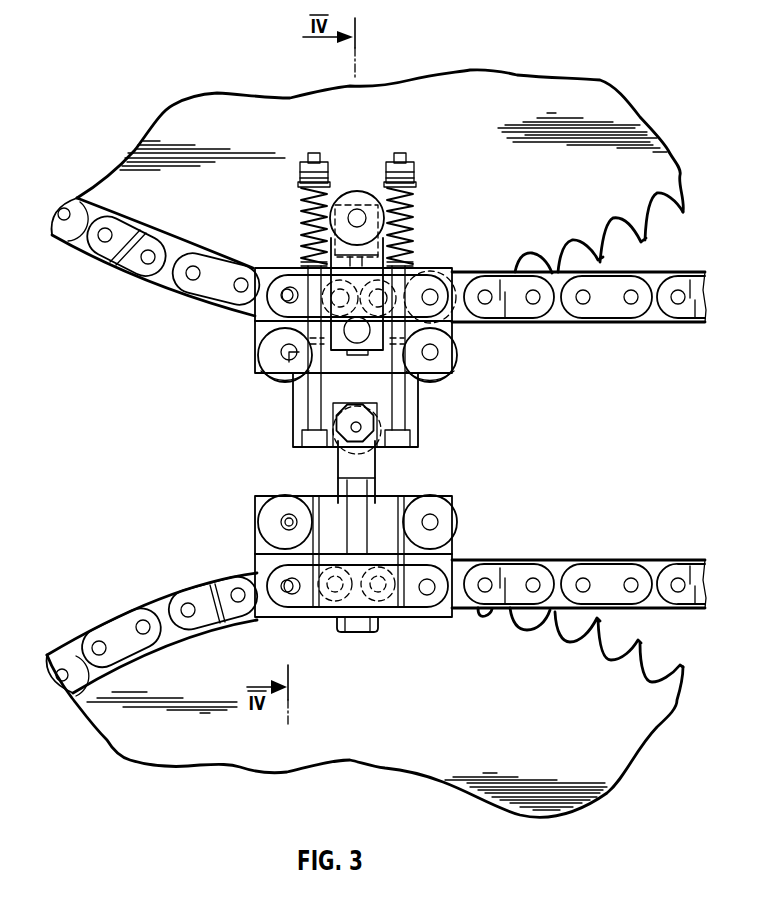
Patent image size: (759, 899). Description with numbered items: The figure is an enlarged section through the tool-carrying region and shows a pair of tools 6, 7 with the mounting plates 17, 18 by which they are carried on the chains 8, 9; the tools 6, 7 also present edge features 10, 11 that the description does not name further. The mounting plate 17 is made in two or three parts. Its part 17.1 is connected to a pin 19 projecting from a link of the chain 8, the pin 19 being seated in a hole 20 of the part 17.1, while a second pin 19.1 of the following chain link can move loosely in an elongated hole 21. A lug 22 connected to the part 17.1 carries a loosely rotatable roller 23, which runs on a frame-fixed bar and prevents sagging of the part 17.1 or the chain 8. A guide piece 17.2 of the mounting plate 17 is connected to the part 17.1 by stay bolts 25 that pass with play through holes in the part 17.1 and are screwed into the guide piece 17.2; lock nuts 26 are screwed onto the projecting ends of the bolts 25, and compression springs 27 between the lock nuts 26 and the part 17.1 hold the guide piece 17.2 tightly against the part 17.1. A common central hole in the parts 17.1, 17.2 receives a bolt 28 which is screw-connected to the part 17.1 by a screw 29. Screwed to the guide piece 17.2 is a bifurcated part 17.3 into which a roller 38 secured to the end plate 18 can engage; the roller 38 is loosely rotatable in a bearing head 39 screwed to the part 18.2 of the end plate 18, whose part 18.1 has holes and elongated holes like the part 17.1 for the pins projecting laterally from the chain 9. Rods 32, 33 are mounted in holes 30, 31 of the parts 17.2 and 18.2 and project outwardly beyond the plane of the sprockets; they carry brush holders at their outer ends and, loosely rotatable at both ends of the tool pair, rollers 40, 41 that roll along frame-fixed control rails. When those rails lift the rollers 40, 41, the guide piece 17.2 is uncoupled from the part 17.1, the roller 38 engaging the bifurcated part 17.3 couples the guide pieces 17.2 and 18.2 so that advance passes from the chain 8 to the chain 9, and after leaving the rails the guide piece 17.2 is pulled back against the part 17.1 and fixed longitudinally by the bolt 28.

The tool 6 is at (486, 148).
The tool 7 is at (489, 686).
The chain 8 is at (657, 313).
The chain 9 is at (622, 568).
The upper toothed edge 10 is at (636, 183).
The lower toothed edge 11 is at (623, 675).
The mounting plate 17 is at (415, 379).
The mounting plate part 17.1 is at (348, 276).
The guide piece 17.2 is at (360, 425).
The bifurcated part 17.3 is at (414, 414).
The end plate 18 is at (430, 549).
The end plate part 18.1 is at (448, 558).
The guide piece 18.2 is at (390, 505).
The pin 19 is at (466, 278).
The second pin 19.1 is at (290, 292).
The hole 20 is at (474, 307).
The elongated hole 21 is at (275, 284).
The lug 22 is at (376, 270).
The roller 23 is at (356, 191).
The stay bolt 25 is at (313, 153).
The lock nut 26 is at (415, 179).
The compression spring 27 is at (415, 212).
The bolt 28 is at (358, 343).
The screw 29 is at (430, 297).
The hole 30 is at (279, 360).
The hole 31 is at (454, 364).
The rod 32 is at (283, 352).
The rod 33 is at (452, 349).
The roller 38 is at (337, 411).
The bearing head 39 is at (352, 441).
The roller 40 is at (440, 380).
The roller 41 is at (283, 381).